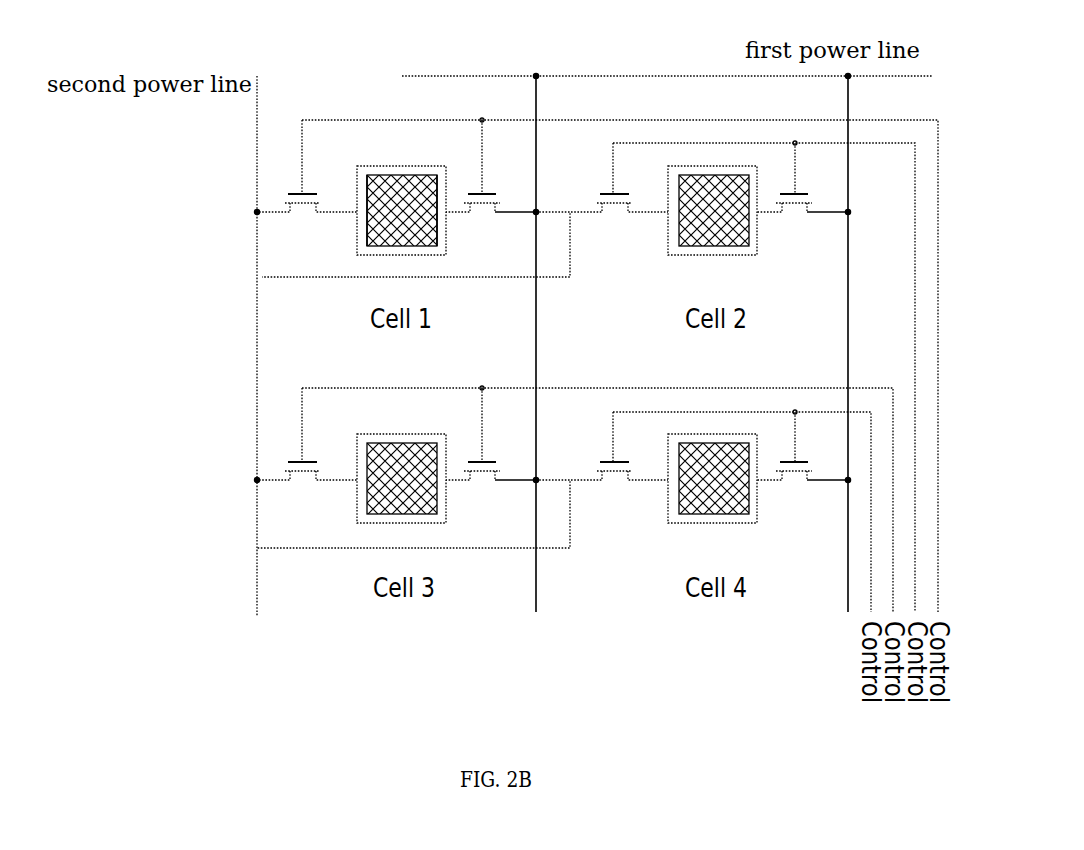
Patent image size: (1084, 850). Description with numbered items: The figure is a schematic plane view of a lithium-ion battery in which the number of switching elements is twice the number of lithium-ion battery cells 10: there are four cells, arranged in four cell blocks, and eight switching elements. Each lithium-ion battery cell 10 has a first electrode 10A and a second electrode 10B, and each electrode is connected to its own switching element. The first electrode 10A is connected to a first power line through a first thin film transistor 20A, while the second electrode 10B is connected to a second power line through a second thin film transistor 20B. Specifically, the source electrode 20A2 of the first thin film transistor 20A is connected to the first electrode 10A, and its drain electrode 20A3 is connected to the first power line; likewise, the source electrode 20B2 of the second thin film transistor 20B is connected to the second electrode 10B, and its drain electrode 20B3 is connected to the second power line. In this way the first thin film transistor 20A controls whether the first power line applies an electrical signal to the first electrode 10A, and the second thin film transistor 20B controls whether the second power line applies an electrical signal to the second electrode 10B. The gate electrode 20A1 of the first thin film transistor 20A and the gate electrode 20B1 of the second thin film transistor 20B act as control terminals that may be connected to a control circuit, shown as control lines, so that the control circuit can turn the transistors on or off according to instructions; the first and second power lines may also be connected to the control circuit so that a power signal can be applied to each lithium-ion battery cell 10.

The lithium-ion battery cell 10 is at (386, 130).
The first electrode 10A is at (438, 211).
The second electrode 10B is at (357, 211).
The first thin film transistor 20A is at (529, 147).
The gate electrode 20A1 is at (482, 193).
The source electrode 20A2 is at (468, 212).
The drain electrode 20A3 is at (497, 212).
The second thin film transistor 20B is at (232, 203).
The gate electrode 20B1 is at (300, 193).
The source electrode 20B2 is at (315, 205).
The drain electrode 20B3 is at (257, 212).